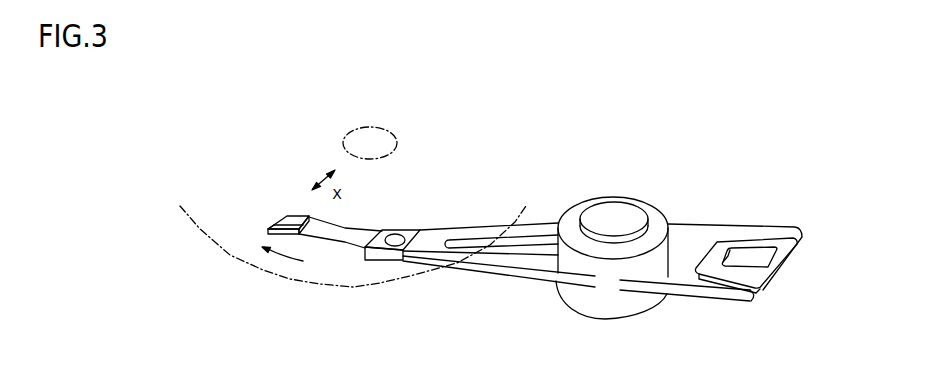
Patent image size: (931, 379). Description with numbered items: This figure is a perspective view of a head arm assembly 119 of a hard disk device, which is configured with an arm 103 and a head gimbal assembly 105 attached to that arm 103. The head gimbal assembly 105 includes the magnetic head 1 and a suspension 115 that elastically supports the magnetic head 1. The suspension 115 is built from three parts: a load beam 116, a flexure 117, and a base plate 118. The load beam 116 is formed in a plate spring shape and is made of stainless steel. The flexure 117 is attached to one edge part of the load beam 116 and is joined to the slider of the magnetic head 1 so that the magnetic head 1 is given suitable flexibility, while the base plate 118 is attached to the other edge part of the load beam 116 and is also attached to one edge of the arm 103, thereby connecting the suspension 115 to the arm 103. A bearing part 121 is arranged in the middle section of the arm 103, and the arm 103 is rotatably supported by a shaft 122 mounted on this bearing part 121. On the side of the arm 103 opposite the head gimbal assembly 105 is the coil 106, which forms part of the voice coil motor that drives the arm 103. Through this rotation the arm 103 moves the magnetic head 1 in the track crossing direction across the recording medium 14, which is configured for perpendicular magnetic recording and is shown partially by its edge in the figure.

The magnetic head 1 is at (292, 217).
The recording medium 14 is at (300, 283).
The arm 103 is at (470, 266).
The head gimbal assembly 105 is at (357, 264).
The coil 106 is at (789, 279).
The suspension 115 is at (358, 197).
The load beam 116 is at (386, 229).
The flexure 117 is at (272, 223).
The base plate 118 is at (423, 228).
The head arm assembly 119 is at (496, 199).
The bearing part 121 is at (572, 210).
The shaft 122 is at (622, 212).